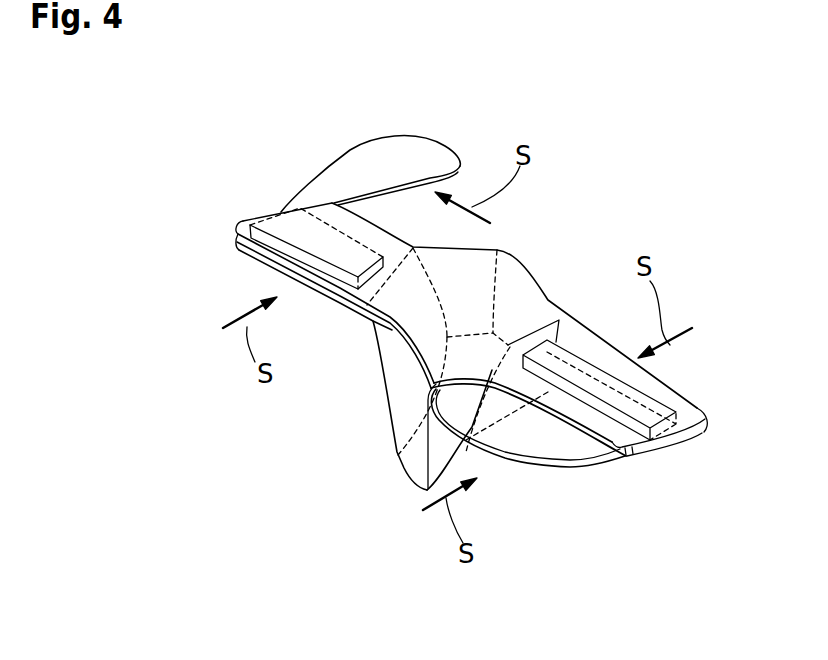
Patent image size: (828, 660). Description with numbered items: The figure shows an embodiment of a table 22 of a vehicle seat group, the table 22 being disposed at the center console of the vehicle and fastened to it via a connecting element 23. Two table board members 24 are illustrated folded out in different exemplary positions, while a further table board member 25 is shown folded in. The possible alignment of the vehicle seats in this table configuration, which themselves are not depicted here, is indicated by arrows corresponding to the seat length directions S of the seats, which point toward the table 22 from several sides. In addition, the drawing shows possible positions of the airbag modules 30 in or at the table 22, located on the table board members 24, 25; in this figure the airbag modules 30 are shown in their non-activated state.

The table 22 is at (618, 162).
The connecting element 23 is at (410, 424).
The table board member 24 is at (433, 162).
The folded-in table board member 25 is at (265, 262).
The airbag module 30 is at (297, 223).